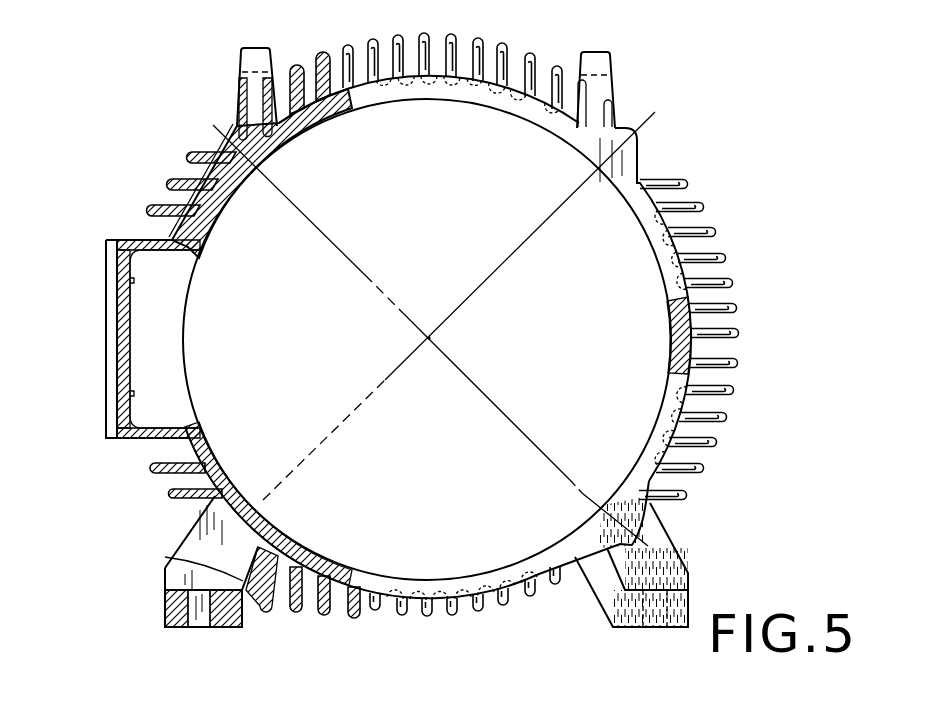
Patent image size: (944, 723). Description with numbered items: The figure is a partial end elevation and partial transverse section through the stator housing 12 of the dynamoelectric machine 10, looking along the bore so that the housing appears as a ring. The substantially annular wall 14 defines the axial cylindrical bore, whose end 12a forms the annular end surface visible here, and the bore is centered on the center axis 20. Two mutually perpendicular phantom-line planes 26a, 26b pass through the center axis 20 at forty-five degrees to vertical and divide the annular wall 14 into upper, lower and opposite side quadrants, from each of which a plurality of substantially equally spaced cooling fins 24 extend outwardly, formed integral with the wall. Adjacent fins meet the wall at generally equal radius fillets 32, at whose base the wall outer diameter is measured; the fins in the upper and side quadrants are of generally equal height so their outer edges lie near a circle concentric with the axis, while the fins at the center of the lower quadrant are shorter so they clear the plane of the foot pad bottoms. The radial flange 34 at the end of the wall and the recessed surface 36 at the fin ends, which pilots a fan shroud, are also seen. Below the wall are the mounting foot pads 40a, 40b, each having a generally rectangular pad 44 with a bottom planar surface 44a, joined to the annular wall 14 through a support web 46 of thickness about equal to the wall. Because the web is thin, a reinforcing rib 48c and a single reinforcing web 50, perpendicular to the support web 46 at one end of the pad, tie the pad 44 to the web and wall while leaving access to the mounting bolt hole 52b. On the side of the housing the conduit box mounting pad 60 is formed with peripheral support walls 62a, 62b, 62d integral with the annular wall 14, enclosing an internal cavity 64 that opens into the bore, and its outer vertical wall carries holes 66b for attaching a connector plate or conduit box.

The dynamoelectric machine 10 is at (703, 86).
The stator housing 12 is at (648, 236).
The end of the housing 12a is at (490, 100).
The annular wall 14 is at (300, 132).
The center axis 20 is at (433, 338).
The cooling fins 24 is at (349, 50).
The phantom line plane 26a is at (511, 255).
The phantom line plane 26b is at (364, 240).
The fillet 32 is at (652, 176).
The radial flange 34 is at (490, 74).
The recessed surface 36 is at (583, 54).
The mounting foot pad 40a is at (179, 581).
The mounting foot pad 40b is at (703, 593).
The rectangular pad 44 is at (165, 612).
The bottom planar surface 44a is at (180, 629).
The support web 46 is at (243, 582).
The reinforcing rib 48c is at (256, 598).
The reinforcing web 50 is at (196, 546).
The mounting bolt hole 52b is at (197, 629).
The conduit box mounting pad 60 is at (118, 334).
The peripheral support wall 62a is at (148, 240).
The peripheral support wall 62b is at (140, 440).
The peripheral support wall 62d is at (186, 281).
The internal cavity 64 is at (85, 339).
The holes 66b is at (130, 281).